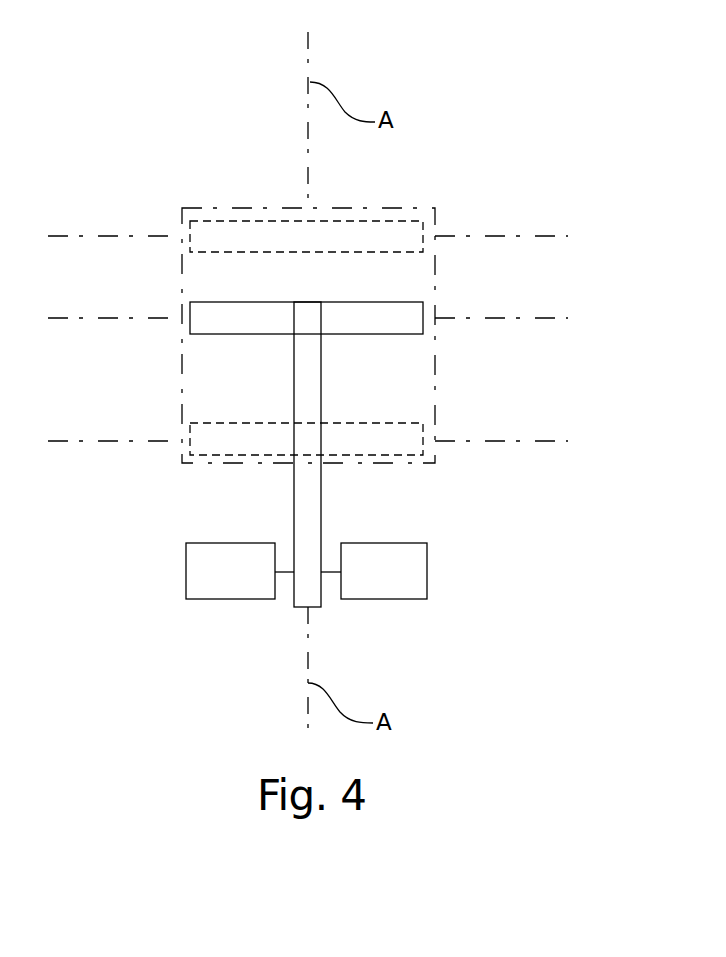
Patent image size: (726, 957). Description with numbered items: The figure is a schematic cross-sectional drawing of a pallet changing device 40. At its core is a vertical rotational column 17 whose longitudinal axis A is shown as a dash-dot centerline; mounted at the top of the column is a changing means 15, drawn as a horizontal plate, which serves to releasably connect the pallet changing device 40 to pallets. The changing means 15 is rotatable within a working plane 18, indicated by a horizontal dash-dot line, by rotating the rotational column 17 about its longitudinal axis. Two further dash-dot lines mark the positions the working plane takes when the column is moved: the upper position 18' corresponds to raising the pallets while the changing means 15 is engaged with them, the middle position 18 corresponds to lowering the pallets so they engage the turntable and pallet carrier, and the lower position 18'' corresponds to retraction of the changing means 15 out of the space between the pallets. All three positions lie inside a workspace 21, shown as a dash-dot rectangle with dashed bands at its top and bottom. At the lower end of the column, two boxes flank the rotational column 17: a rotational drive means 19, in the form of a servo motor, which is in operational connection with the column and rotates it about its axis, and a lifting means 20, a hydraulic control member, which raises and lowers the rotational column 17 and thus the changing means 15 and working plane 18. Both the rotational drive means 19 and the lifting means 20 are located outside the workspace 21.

The changing means 15 is at (382, 307).
The rotational column 17 is at (308, 370).
The working plane 18 is at (332, 276).
The raised working plane position 18' is at (326, 189).
The lowered working plane position 18'' is at (337, 485).
The rotational drive means 19 is at (195, 572).
The lifting means 20 is at (418, 572).
The workspace 21 is at (192, 207).
The pallet changing device 40 is at (482, 487).